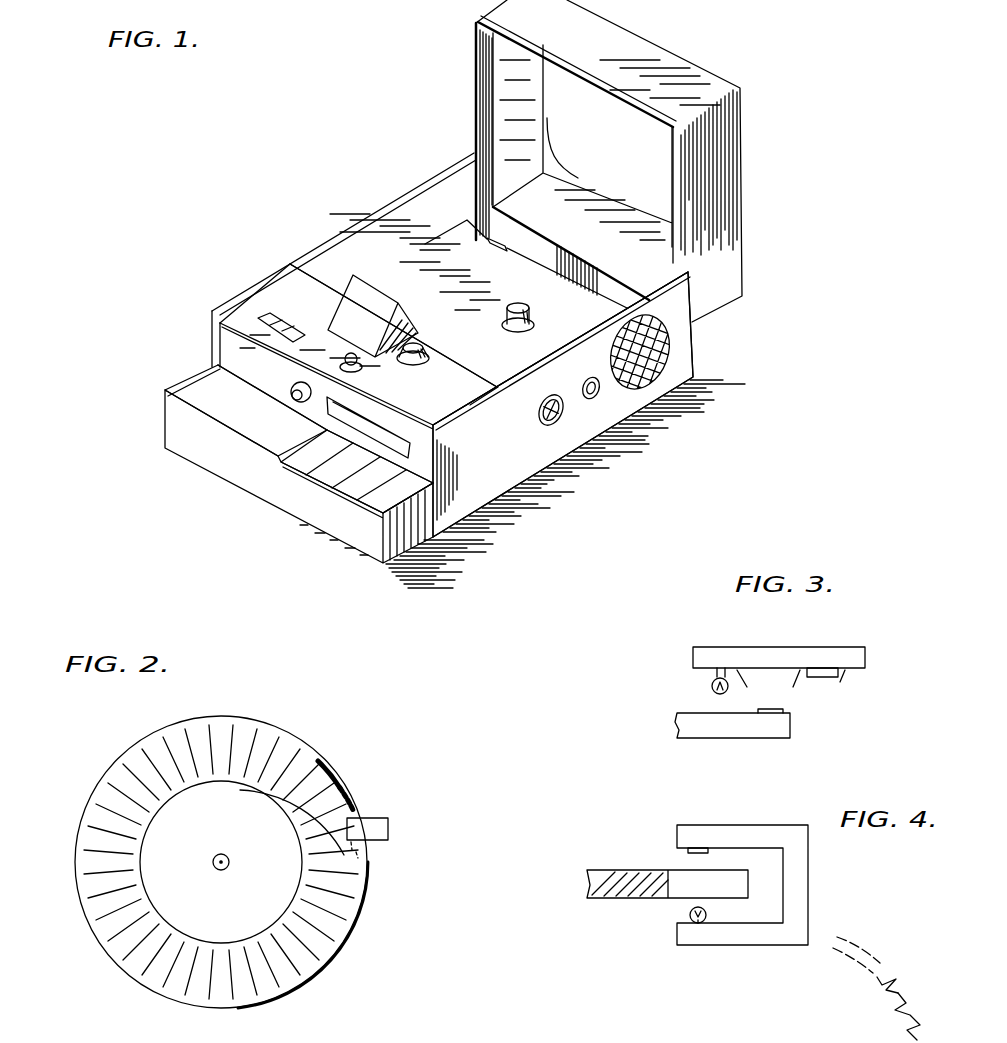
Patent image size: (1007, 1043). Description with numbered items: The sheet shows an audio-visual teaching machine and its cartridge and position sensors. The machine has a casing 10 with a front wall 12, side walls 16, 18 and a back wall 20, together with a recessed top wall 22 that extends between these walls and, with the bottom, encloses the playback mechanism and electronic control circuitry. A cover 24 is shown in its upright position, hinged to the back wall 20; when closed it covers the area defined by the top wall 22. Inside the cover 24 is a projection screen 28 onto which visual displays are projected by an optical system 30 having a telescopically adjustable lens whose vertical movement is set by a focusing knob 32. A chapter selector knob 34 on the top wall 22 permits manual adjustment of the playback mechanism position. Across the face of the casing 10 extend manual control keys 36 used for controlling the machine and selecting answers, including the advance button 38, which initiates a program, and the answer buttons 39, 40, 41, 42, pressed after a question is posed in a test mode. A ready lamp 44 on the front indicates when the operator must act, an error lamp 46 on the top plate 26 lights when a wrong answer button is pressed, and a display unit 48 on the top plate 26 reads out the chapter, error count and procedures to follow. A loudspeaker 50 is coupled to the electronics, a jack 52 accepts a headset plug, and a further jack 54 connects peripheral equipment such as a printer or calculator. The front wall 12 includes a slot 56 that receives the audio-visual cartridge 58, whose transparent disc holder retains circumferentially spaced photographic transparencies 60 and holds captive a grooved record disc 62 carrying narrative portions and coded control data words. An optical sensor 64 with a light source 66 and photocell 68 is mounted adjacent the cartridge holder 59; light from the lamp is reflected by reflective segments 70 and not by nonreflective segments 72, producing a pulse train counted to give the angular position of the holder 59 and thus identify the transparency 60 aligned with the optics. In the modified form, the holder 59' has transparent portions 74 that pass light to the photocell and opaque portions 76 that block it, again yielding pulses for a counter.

In FIG. 1, the casing 10 is at (472, 513).
In FIG. 1, the front wall 12 is at (180, 420).
In FIG. 1, the side wall 16 is at (322, 240).
In FIG. 1, the side wall 18 is at (505, 390).
In FIG. 1, the back wall 20 is at (692, 355).
In FIG. 1, the recessed top wall 22 is at (450, 248).
In FIG. 1, the cover 24 is at (752, 185).
In FIG. 1, the top plate 26 is at (293, 295).
In FIG. 1, the projection screen 28 is at (600, 102).
In FIG. 1, the optical system 30 is at (406, 310).
In FIG. 1, the focusing knob 32 is at (420, 364).
In FIG. 1, the chapter selector knob 34 is at (505, 316).
In FIG. 1, the manual control keys 36 is at (292, 478).
In FIG. 1, the advance button 38 is at (282, 440).
In FIG. 1, the answer button 39 is at (310, 470).
In FIG. 1, the answer button 40 is at (336, 480).
In FIG. 1, the answer button 41 is at (358, 488).
In FIG. 1, the answer button 42 is at (378, 500).
In FIG. 1, the ready lamp 44 is at (290, 386).
In FIG. 1, the error lamp 46 is at (353, 372).
In FIG. 1, the display unit 48 is at (258, 314).
In FIG. 1, the loudspeaker 50 is at (658, 368).
In FIG. 1, the jack 52 is at (592, 400).
In FIG. 1, the jack 54 is at (542, 426).
In FIG. 1, the slot 56 is at (373, 430).
In FIG. 2, the audio-visual cartridge 58 is at (84, 804).
In FIG. 2, the cartridge holder 59 is at (314, 935).
In FIG. 3, the cartridge holder 59 is at (705, 733).
In FIG. 4, the holder 59' is at (753, 921).
In FIG. 2, the photographic transparencies 60 is at (293, 740).
In FIG. 2, the record disc 62 is at (278, 890).
In FIG. 2, the optical sensor 64 is at (378, 817).
In FIG. 3, the optical sensor 64 is at (813, 703).
In FIG. 3, the light source 66 is at (712, 681).
In FIG. 3, the photocell 68 is at (827, 678).
In FIG. 2, the reflective segments 70 is at (350, 787).
In FIG. 2, the nonreflective segments 72 is at (343, 790).
In FIG. 4, the transparent portions 74 is at (887, 975).
In FIG. 4, the opaque portions 76 is at (900, 983).